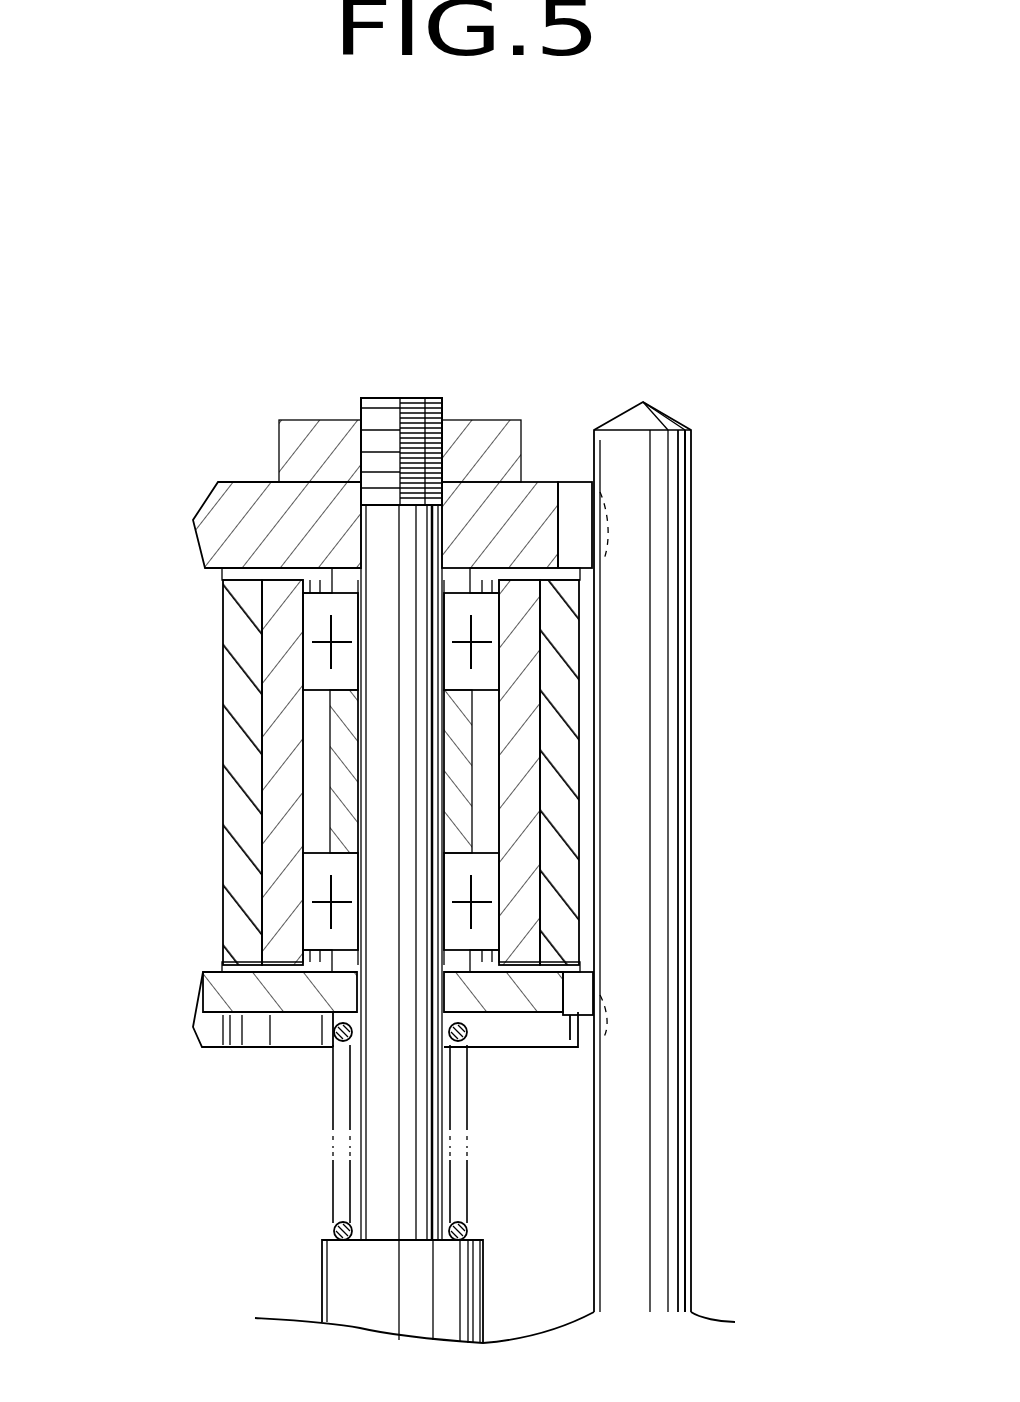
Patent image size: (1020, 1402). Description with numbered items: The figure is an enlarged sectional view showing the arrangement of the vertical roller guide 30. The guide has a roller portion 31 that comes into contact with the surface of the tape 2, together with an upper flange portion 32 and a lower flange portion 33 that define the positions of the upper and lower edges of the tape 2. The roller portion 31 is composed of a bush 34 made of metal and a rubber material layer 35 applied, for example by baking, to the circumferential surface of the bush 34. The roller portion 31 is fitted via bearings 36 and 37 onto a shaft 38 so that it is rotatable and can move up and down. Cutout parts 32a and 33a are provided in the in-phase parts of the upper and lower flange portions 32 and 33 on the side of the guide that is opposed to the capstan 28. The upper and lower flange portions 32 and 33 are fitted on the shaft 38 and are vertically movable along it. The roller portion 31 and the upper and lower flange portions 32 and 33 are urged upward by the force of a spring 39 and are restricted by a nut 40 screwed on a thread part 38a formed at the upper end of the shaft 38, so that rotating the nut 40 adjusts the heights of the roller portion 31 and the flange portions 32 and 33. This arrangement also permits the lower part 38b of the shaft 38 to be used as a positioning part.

The tape 2 is at (593, 827).
The capstan 28 is at (638, 705).
The vertical roller guide 30 is at (262, 415).
The roller portion 31 is at (217, 733).
The upper flange portion 32 is at (243, 528).
The cutout part 32a is at (585, 530).
The lower flange portion 33 is at (225, 995).
The cutout part 33a is at (577, 997).
The bush 34 is at (273, 673).
The rubber material layer 35 is at (240, 815).
The bearing 36 is at (313, 623).
The bearing 37 is at (313, 890).
The shaft 38 is at (385, 1102).
The thread part 38a is at (385, 425).
The lower part of the shaft 38b is at (355, 1282).
The spring 39 is at (333, 1182).
The nut 40 is at (485, 455).